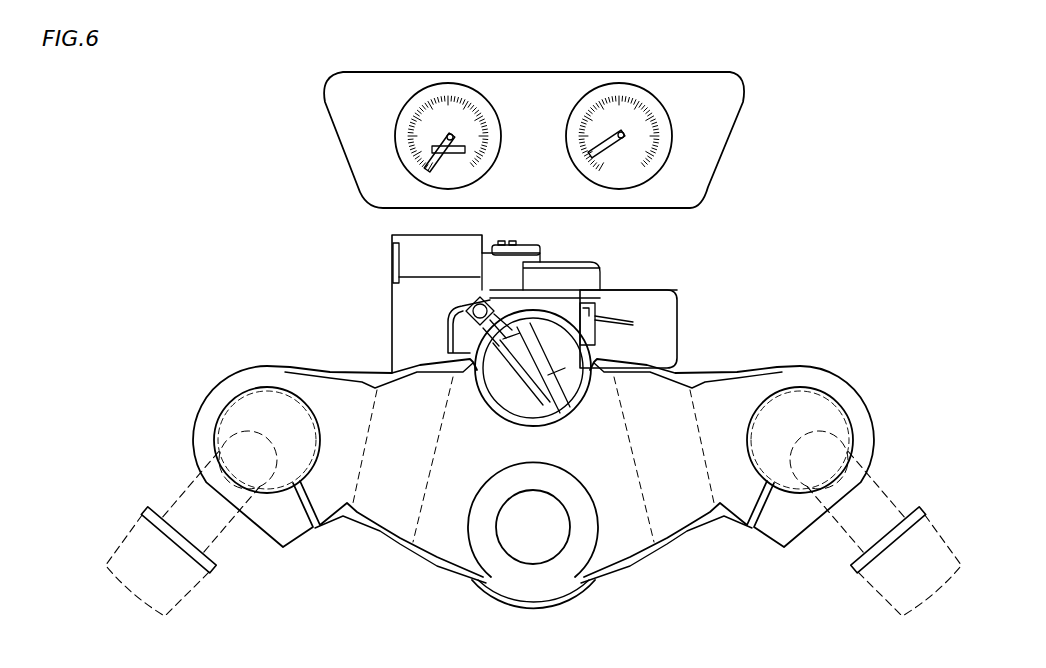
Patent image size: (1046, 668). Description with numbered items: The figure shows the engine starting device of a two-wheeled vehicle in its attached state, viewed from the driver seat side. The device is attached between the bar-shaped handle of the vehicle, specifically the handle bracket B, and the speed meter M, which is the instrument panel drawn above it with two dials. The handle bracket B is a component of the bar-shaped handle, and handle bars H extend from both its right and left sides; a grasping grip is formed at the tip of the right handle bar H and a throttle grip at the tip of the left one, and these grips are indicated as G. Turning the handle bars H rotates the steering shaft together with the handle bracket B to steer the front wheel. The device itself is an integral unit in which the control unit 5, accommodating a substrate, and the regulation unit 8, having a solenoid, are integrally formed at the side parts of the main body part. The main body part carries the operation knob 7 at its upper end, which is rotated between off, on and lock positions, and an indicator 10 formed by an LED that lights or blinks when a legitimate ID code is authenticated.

The speed meter M is at (732, 115).
The handle bracket B is at (741, 375).
The handle bars H is at (167, 502).
The grip G is at (210, 597).
The control unit 5 is at (388, 322).
The operation knob 7 is at (542, 330).
The regulation unit 8 is at (657, 290).
The indicator 10 is at (450, 310).